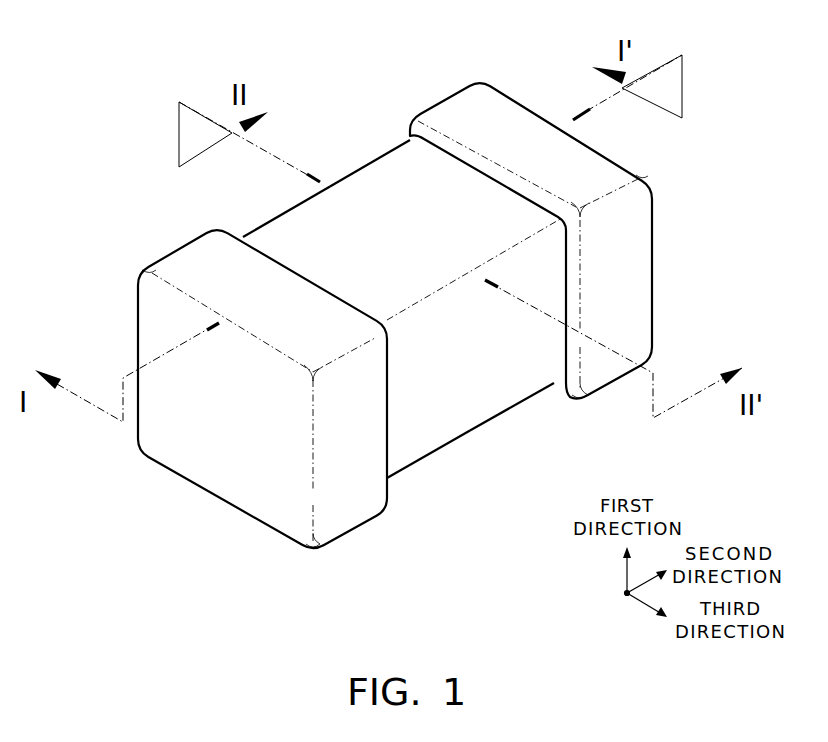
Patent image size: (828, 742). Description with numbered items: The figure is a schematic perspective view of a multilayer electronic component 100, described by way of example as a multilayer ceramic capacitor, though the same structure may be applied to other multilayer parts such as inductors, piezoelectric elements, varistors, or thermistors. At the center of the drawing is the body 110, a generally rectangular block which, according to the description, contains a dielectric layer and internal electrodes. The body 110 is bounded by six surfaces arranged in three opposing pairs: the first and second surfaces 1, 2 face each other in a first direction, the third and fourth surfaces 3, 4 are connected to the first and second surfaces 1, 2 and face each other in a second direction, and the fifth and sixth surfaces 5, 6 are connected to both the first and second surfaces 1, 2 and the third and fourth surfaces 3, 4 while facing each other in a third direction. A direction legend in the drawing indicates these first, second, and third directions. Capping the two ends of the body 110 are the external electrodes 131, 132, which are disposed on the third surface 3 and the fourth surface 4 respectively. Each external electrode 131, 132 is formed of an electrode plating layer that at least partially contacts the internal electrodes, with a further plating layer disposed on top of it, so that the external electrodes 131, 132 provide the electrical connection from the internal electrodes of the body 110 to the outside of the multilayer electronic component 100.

The multilayer electronic component 100 is at (300, 43).
The body 110 is at (270, 238).
The external electrode 131 is at (185, 258).
The external electrode 132 is at (446, 109).
The first surface 1 is at (448, 417).
The second surface 2 is at (409, 200).
The third surface 3 is at (225, 428).
The fourth surface 4 is at (625, 264).
The fifth surface 5 is at (366, 197).
The sixth surface 6 is at (472, 355).